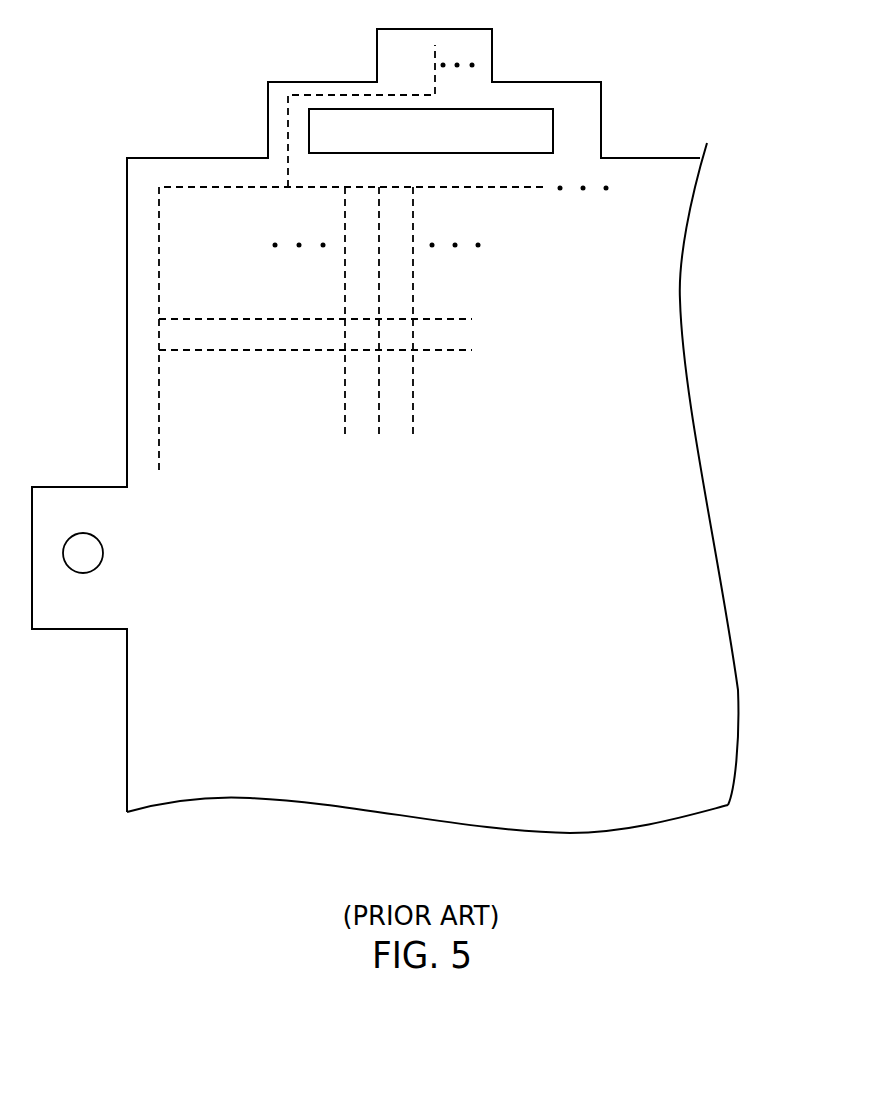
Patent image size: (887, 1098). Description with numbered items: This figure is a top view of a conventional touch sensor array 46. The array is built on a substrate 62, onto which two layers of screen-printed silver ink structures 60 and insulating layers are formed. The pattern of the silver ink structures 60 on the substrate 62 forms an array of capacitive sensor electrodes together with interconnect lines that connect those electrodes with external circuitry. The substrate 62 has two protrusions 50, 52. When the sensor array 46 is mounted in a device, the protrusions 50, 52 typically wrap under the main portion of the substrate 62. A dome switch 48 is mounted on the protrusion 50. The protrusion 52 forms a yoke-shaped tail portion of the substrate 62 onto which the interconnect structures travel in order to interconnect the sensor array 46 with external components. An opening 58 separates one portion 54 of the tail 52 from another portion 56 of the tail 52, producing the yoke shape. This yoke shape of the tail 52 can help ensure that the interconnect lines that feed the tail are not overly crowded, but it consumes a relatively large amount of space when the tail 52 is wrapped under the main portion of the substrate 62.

The conventional touch sensor array 46 is at (145, 108).
The dome switch 48 is at (84, 540).
The protrusion 50 is at (127, 641).
The protrusion 52 is at (628, 28).
The portion of tail 54 is at (275, 123).
The portion of tail 56 is at (577, 128).
The opening 58 is at (338, 123).
The silver ink structures 60 is at (159, 222).
The substrate 62 is at (693, 523).